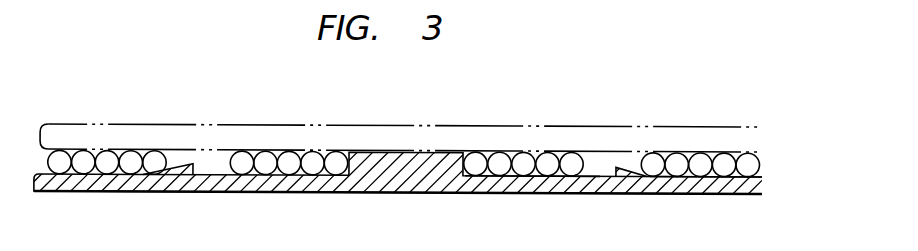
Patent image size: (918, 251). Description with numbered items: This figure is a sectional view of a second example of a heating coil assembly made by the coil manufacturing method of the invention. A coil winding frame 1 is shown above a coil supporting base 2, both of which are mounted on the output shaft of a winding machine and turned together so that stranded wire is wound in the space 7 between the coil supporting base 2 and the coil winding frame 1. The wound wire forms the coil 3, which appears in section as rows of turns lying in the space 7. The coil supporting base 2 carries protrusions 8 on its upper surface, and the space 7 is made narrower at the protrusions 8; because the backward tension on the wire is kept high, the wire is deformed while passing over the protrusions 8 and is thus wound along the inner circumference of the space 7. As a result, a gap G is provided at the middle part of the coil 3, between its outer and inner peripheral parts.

The coil winding frame 1 is at (455, 131).
The coil supporting base 2 is at (655, 179).
The coil 3 is at (337, 167).
The space 7 is at (578, 176).
The protrusions 8 is at (192, 167).
The gap G is at (612, 160).